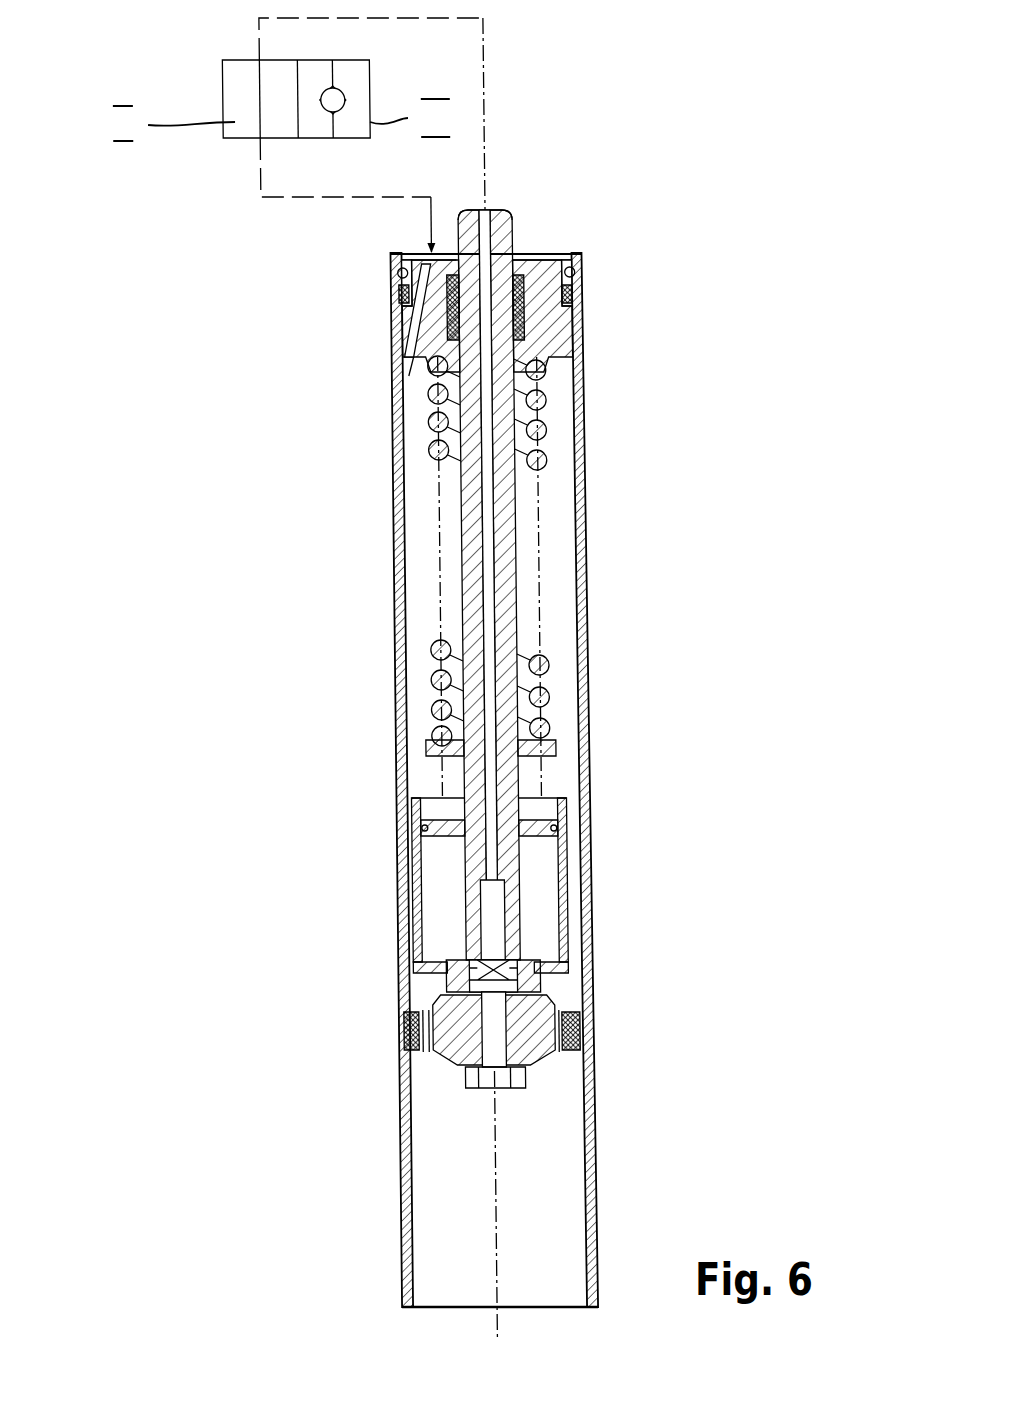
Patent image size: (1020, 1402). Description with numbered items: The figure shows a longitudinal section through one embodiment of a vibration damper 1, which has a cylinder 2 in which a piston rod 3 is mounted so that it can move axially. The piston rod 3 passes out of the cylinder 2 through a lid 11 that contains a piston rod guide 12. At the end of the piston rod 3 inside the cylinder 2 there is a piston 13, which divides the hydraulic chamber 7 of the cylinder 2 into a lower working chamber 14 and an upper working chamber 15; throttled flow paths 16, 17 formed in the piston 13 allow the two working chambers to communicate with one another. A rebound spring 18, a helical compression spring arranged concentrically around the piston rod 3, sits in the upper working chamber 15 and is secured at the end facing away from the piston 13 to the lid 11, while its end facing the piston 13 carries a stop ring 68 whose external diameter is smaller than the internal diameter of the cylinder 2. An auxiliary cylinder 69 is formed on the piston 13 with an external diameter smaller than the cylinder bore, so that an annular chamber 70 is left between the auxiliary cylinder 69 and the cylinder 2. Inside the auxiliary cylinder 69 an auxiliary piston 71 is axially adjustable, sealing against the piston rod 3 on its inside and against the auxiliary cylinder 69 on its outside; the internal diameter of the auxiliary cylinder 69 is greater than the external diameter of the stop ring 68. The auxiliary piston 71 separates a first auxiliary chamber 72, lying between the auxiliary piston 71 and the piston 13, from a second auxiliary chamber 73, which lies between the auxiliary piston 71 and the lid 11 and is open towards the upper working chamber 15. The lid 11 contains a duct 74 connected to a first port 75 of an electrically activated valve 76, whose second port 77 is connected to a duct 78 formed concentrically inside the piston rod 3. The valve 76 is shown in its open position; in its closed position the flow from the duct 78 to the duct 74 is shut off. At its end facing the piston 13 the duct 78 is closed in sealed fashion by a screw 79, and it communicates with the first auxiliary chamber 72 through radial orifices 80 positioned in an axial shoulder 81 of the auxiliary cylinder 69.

The vibration damper 1 is at (427, 670).
The cylinder 2 is at (386, 680).
The piston rod 3 is at (468, 523).
The hydraulic chamber 7 is at (444, 1172).
The lid 11 is at (565, 291).
The piston rod guide 12 is at (547, 323).
The piston 13 is at (498, 1105).
The lower working chamber 14 is at (555, 1262).
The upper working chamber 15 is at (551, 512).
The throttled flow path 16 is at (574, 1050).
The throttled flow path 17 is at (412, 1053).
The rebound spring 18 is at (543, 662).
The stop ring 68 is at (529, 740).
The auxiliary cylinder 69 is at (494, 848).
The annular chamber 70 is at (569, 830).
The auxiliary piston 71 is at (540, 820).
The first auxiliary chamber 72 is at (429, 888).
The second auxiliary chamber 73 is at (428, 810).
The duct 74 is at (405, 298).
The first port 75 is at (262, 138).
The electrically activated valve 76 is at (222, 78).
The second port 77 is at (262, 60).
The duct 78 is at (500, 220).
The screw 79 is at (489, 1090).
The radial orifices 80 is at (451, 960).
The axial shoulder 81 is at (441, 976).